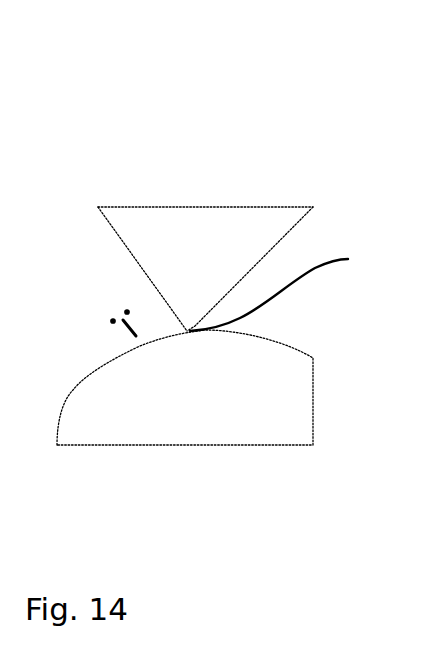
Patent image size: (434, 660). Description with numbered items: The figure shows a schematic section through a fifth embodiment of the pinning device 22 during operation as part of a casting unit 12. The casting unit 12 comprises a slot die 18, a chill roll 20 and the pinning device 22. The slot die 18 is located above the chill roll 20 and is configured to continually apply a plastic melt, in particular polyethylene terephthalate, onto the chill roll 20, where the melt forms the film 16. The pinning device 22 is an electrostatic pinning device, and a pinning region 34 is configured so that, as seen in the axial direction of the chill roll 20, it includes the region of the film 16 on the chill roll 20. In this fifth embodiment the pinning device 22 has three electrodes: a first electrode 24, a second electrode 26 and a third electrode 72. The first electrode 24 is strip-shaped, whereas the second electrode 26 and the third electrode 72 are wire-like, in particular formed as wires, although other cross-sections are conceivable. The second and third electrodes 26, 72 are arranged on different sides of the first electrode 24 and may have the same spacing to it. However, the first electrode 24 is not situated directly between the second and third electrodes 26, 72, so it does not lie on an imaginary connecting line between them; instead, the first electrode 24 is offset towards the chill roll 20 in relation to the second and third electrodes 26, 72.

The casting unit 12 is at (127, 101).
The pinning device 22 is at (90, 175).
The slot die 18 is at (192, 226).
The pinning region 34 is at (155, 334).
The film 16 is at (282, 288).
The chill roll 20 is at (302, 407).
The third electrode 72 is at (127, 312).
The second electrode 26 is at (113, 321).
The first electrode 24 is at (135, 335).